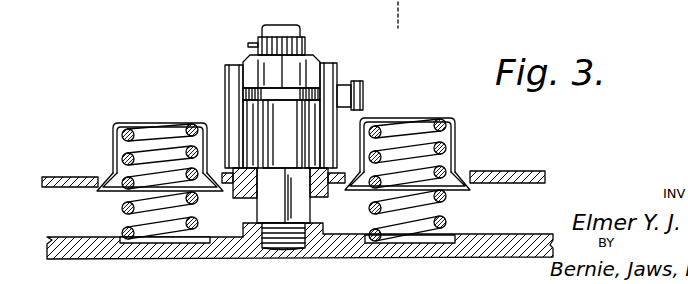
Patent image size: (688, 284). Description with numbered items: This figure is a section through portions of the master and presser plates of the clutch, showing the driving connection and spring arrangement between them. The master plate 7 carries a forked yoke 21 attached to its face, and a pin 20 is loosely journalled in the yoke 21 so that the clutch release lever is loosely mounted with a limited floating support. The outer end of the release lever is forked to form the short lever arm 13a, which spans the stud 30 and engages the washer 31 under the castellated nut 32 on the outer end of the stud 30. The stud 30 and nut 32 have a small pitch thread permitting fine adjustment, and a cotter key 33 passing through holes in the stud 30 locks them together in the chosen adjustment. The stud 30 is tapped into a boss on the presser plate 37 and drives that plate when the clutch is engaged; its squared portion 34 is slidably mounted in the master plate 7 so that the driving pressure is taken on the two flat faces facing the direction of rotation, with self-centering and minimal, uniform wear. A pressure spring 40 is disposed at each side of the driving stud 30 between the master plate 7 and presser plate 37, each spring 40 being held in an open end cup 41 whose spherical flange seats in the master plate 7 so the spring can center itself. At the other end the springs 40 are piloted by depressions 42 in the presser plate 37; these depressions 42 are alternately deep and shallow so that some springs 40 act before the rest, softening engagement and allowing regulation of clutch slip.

The master plate 7 is at (50, 177).
The short lever arm 13a is at (313, 116).
The pin 20 is at (347, 91).
The forked yoke 21 is at (333, 76).
The stud 30 is at (290, 133).
The washer 31 is at (287, 91).
The castellated nut 32 is at (297, 70).
The cotter key 33 is at (304, 41).
The squared portion 34 is at (303, 209).
The presser plate 37 is at (80, 238).
The pressure spring 40 is at (143, 160).
The spring cup 41 is at (112, 140).
The depression 42 is at (201, 236).